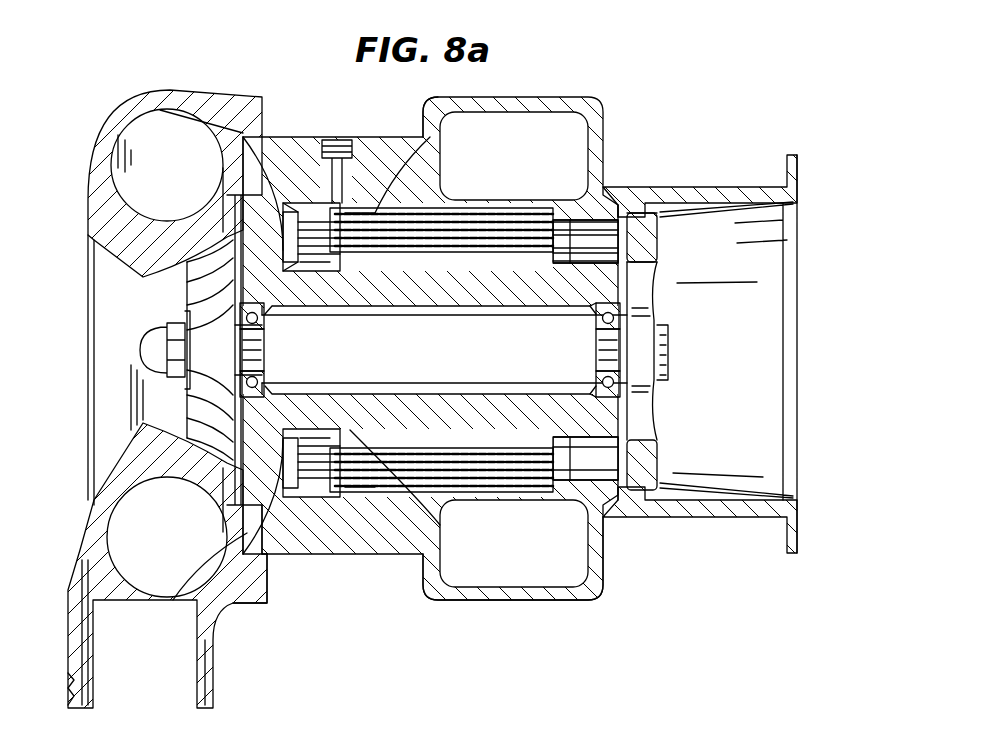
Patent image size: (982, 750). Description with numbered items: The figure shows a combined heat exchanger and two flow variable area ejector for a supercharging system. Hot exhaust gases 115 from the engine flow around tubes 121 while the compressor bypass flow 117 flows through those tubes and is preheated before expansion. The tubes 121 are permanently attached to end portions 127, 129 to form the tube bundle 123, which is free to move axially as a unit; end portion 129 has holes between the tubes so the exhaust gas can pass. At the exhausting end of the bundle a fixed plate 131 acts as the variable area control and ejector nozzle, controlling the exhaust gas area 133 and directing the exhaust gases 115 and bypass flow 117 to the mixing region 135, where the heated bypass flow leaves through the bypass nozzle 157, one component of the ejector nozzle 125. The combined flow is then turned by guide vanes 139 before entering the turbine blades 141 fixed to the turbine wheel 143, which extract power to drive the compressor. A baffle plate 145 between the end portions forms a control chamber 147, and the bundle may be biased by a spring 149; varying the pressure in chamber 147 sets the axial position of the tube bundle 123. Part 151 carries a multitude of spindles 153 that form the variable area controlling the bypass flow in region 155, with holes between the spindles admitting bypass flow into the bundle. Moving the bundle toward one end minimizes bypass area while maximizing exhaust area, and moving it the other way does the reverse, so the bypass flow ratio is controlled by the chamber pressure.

The hot exhaust gases 115 is at (490, 472).
The bypass flow 117 is at (176, 600).
The tubes 121 is at (470, 412).
The tube bundle 123 is at (458, 250).
The ejector nozzle 125 is at (540, 285).
The end portion 127 is at (357, 295).
The end portion 129 is at (522, 222).
The fixed plate 131 is at (557, 222).
The exhaust gas area 133 is at (546, 478).
The mixing region 135 is at (560, 238).
The guide vanes 139 is at (630, 224).
The turbine blades 141 is at (647, 253).
The turbine wheel 143 is at (640, 347).
The baffle plate 145 is at (413, 293).
The control chamber 147 is at (366, 213).
The spring 149 is at (312, 505).
The member with spindles 151 is at (272, 430).
The spindles 153 is at (305, 200).
The bypass flow region 155 is at (318, 412).
The bypass nozzle 157 is at (553, 467).